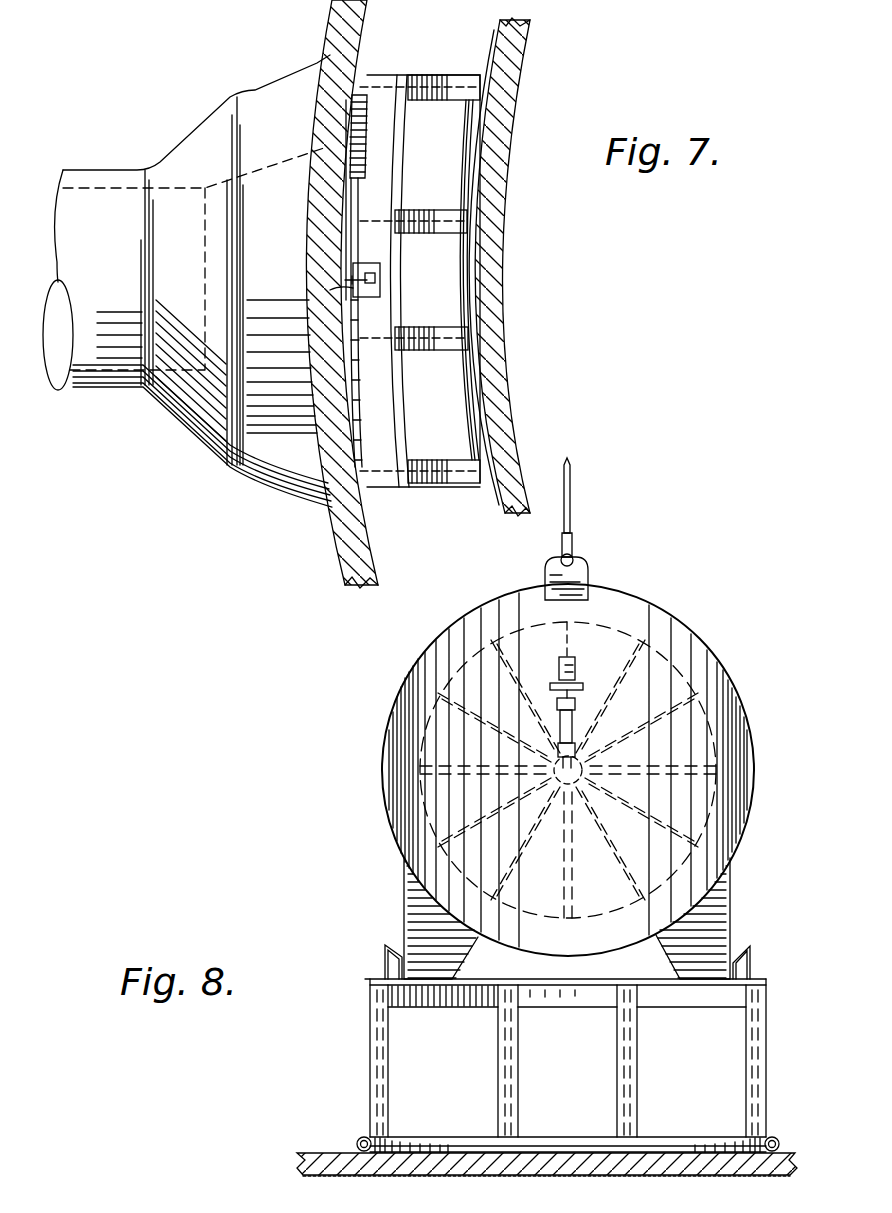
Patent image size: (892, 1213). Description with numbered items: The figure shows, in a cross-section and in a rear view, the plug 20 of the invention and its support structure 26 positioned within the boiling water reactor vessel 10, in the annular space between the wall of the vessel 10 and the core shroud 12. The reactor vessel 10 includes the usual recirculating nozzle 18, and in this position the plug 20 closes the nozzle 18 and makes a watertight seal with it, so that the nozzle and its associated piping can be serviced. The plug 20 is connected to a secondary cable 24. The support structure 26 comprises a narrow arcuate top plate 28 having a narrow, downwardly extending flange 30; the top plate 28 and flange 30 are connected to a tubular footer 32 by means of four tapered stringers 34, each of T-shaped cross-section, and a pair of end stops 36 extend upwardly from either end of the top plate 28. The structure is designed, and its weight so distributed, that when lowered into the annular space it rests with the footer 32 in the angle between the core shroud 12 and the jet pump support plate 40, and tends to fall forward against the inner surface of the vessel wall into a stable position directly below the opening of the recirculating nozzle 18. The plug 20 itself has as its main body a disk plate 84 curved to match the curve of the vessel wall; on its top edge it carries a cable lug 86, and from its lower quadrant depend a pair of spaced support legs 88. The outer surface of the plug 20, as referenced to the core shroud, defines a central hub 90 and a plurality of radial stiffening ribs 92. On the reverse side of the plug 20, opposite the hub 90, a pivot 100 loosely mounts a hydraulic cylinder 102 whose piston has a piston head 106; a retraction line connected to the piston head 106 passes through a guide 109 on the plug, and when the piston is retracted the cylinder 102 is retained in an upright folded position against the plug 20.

In FIG. 7, the reactor vessel 10 is at (302, 577).
In FIG. 7, the core shroud 12 is at (494, 188).
In FIG. 7, the recirculating nozzle 18 is at (178, 408).
In FIG. 7, the plug 20 is at (372, 112).
In FIG. 8, the plug 20 is at (370, 718).
In FIG. 7, the secondary cable 24 is at (353, 290).
In FIG. 8, the secondary cable 24 is at (572, 492).
In FIG. 7, the support structure 26 is at (423, 247).
In FIG. 8, the support structure 26 is at (525, 1065).
In FIG. 7, the top plate 28 is at (378, 368).
In FIG. 8, the top plate 28 is at (372, 983).
In FIG. 8, the flange 30 is at (468, 1000).
In FIG. 7, the footer 32 is at (506, 250).
In FIG. 8, the footer 32 is at (446, 1148).
In FIG. 7, the stringers 34 is at (450, 100).
In FIG. 8, the stringers 34 is at (497, 1082).
In FIG. 8, the end stops 36 is at (384, 950).
In FIG. 8, the jet pump support plate 40 is at (320, 1153).
In FIG. 7, the disk plate 84 is at (348, 190).
In FIG. 8, the disk plate 84 is at (690, 625).
In FIG. 7, the cable lug 86 is at (353, 268).
In FIG. 8, the cable lug 86 is at (590, 572).
In FIG. 8, the support legs 88 is at (415, 892).
In FIG. 8, the central hub 90 is at (568, 779).
In FIG. 8, the radial stiffening ribs 92 is at (722, 670).
In FIG. 8, the pivot 100 is at (561, 774).
In FIG. 8, the hydraulic cylinder 102 is at (578, 720).
In FIG. 7, the piston head 106 is at (356, 238).
In FIG. 8, the piston head 106 is at (578, 675).
In FIG. 7, the guide 109 is at (378, 278).
In FIG. 8, the guide 109 is at (558, 668).